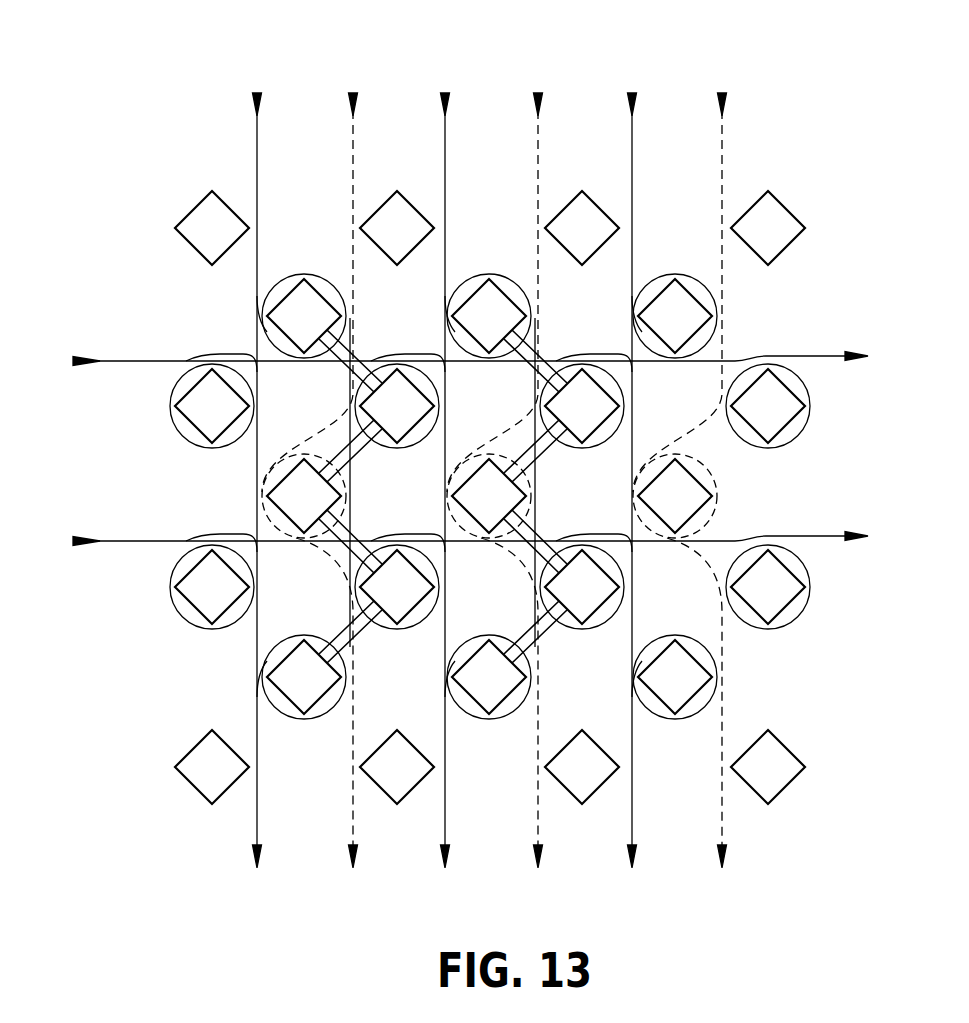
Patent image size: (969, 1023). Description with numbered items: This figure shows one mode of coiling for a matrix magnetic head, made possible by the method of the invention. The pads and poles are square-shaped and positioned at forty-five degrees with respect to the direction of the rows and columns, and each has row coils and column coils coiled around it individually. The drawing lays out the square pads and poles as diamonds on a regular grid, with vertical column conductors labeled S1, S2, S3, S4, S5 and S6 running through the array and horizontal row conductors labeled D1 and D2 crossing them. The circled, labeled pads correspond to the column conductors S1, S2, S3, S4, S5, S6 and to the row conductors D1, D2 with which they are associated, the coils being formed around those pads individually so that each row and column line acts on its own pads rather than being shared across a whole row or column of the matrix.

The first source line S1 is at (295, 483).
The second source line S2 is at (314, 483).
The third source line S3 is at (481, 483).
The fourth source line S4 is at (499, 483).
The fifth source line S5 is at (668, 483).
The sixth source line S6 is at (684, 483).
The first drain line D1 is at (468, 397).
The second drain line D2 is at (468, 578).